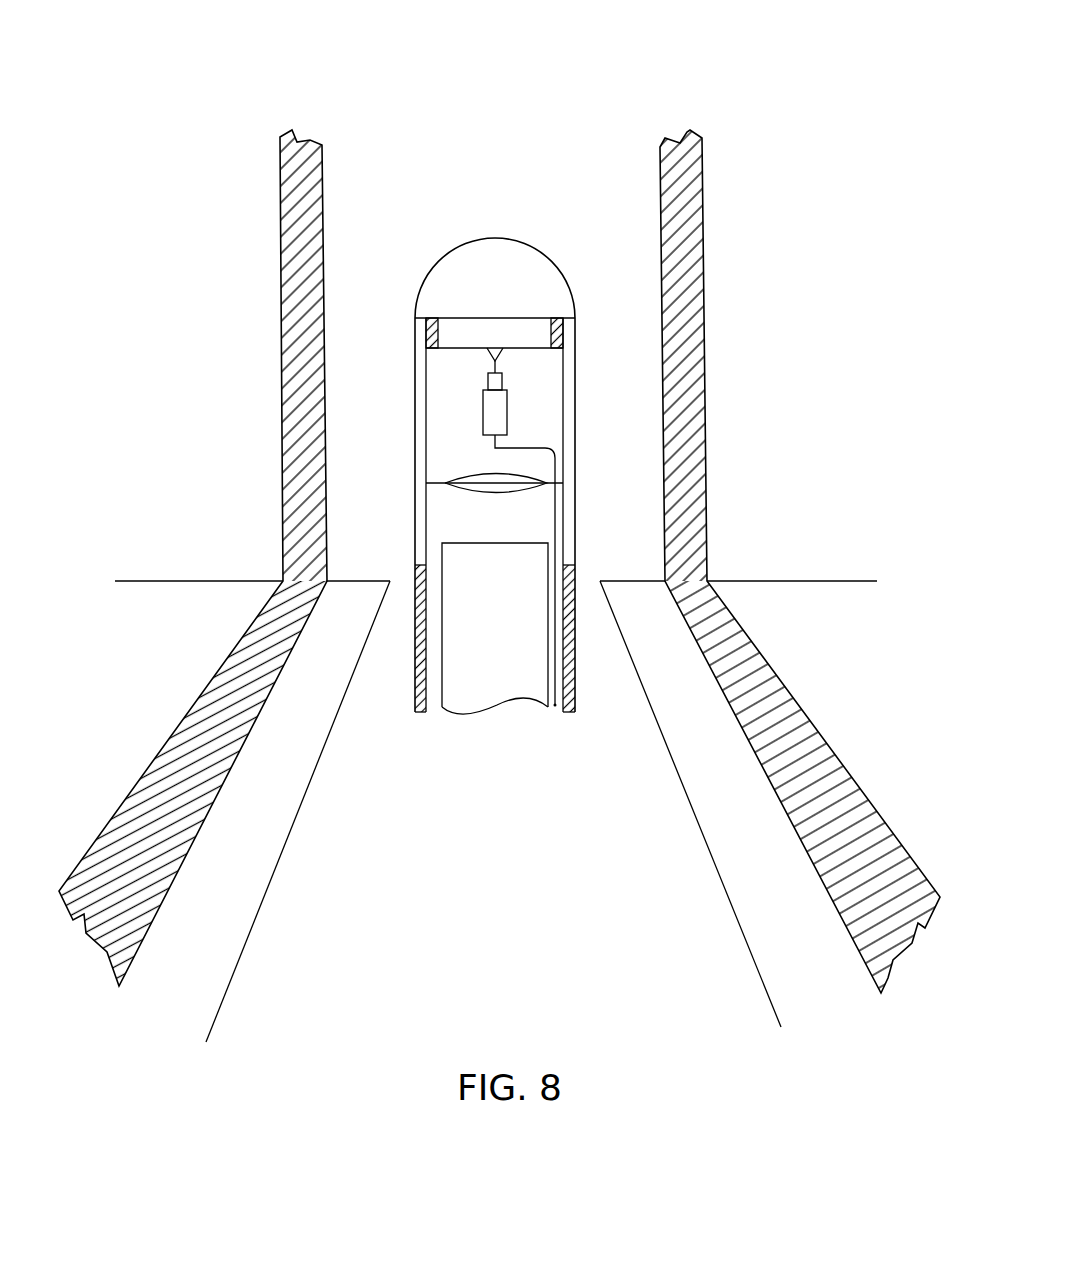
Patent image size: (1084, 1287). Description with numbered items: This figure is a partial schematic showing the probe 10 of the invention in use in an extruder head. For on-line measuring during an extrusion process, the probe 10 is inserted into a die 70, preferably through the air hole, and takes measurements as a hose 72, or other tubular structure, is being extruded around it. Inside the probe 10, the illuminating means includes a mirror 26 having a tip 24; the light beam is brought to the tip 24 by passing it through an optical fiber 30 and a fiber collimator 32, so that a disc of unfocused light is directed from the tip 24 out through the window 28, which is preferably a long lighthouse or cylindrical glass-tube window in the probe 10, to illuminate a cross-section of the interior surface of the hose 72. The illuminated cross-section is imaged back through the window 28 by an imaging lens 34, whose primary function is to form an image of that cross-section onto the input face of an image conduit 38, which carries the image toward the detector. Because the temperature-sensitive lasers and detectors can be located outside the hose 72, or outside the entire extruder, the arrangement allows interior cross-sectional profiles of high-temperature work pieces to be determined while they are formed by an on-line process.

The probe 10 is at (530, 190).
The tip 24 is at (502, 352).
The mirror 26 is at (509, 346).
The window 28 is at (414, 405).
The optical fiber 30 is at (533, 449).
The fiber collimator 32 is at (488, 418).
The imaging lens 34 is at (487, 491).
The image conduit 38 is at (509, 645).
The die 70 is at (748, 333).
The hose 72 is at (318, 211).